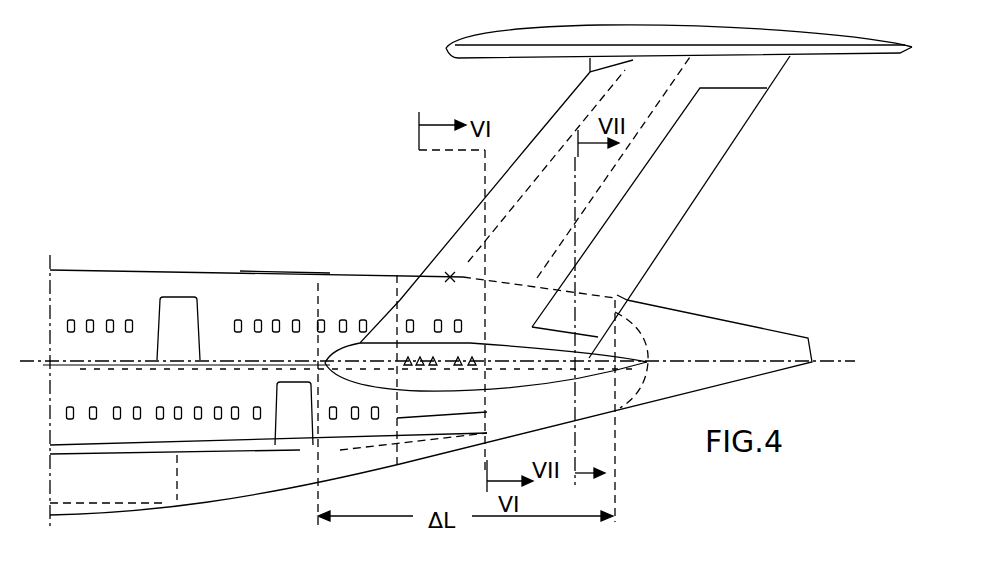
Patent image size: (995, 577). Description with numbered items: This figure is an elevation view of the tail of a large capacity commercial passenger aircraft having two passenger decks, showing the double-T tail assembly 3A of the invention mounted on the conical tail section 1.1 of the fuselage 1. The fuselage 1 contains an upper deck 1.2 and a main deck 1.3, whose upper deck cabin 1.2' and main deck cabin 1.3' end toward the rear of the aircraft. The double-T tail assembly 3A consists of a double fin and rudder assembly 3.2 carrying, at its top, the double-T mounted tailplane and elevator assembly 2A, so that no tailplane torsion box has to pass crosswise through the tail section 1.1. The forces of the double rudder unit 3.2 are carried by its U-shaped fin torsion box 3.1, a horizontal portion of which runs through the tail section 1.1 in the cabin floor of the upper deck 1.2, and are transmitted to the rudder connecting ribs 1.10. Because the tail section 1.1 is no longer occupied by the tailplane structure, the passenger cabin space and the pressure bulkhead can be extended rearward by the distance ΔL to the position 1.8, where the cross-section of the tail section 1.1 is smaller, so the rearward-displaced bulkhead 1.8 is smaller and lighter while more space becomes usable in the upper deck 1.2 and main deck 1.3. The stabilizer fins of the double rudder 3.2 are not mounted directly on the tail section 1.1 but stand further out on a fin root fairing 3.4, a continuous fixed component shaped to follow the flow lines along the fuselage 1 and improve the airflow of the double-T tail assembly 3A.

The fuselage 1 is at (240, 272).
The tail section 1.1 is at (725, 298).
The upper deck 1.2 is at (462, 353).
The upper deck cabin 1.2' is at (285, 265).
The main deck 1.3 is at (225, 497).
The main deck cabin 1.3' is at (268, 486).
The rearward-displaced pressure bulkhead position 1.8 is at (647, 358).
The rudder connecting ribs 1.10 is at (487, 412).
The double-T mounted tailplane and elevator assembly 2A is at (460, 52).
The double-T tail assembly 3A is at (798, 109).
The fin torsion box 3.1 is at (558, 255).
The double fin and rudder assembly 3.2 is at (607, 193).
The fin root fairing 3.4 is at (523, 377).